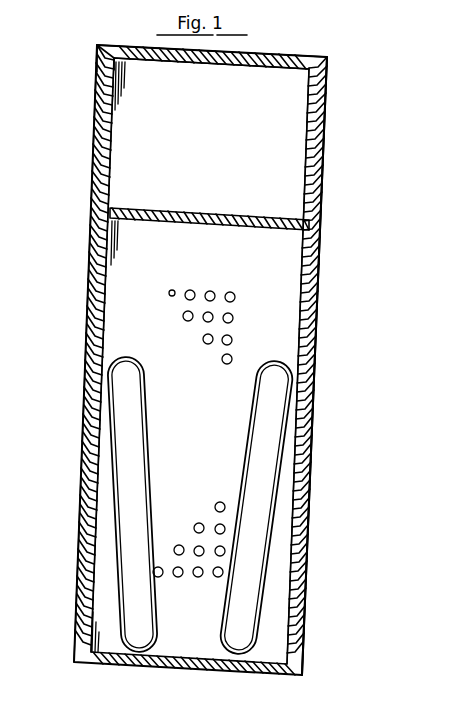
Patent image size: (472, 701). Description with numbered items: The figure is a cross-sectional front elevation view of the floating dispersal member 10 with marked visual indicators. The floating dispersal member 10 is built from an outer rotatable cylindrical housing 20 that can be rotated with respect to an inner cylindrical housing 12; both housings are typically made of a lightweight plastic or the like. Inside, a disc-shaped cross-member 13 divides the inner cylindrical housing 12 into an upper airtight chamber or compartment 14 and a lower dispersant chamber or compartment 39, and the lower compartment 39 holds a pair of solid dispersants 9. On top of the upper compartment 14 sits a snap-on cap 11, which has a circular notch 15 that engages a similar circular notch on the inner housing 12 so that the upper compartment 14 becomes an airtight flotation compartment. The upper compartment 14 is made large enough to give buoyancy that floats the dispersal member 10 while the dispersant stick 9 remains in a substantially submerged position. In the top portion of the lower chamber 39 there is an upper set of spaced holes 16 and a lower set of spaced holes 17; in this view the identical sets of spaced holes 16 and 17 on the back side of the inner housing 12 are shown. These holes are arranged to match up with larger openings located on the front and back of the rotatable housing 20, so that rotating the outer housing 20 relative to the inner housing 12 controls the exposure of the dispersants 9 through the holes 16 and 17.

The floating dispersal member 10 is at (342, 217).
The snap-on cap 11 is at (329, 72).
The inner cylindrical housing 12 is at (306, 147).
The disc-shaped cross-member 13 is at (205, 209).
The upper airtight chamber 14 is at (195, 140).
The circular notch 15 is at (97, 72).
The upper set of spaced holes 16 is at (230, 291).
The lower set of spaced holes 17 is at (177, 579).
The outer rotatable cylindrical housing 20 is at (320, 308).
The solid dispersant 9 is at (144, 400).
The lower dispersant chamber 39 is at (185, 457).